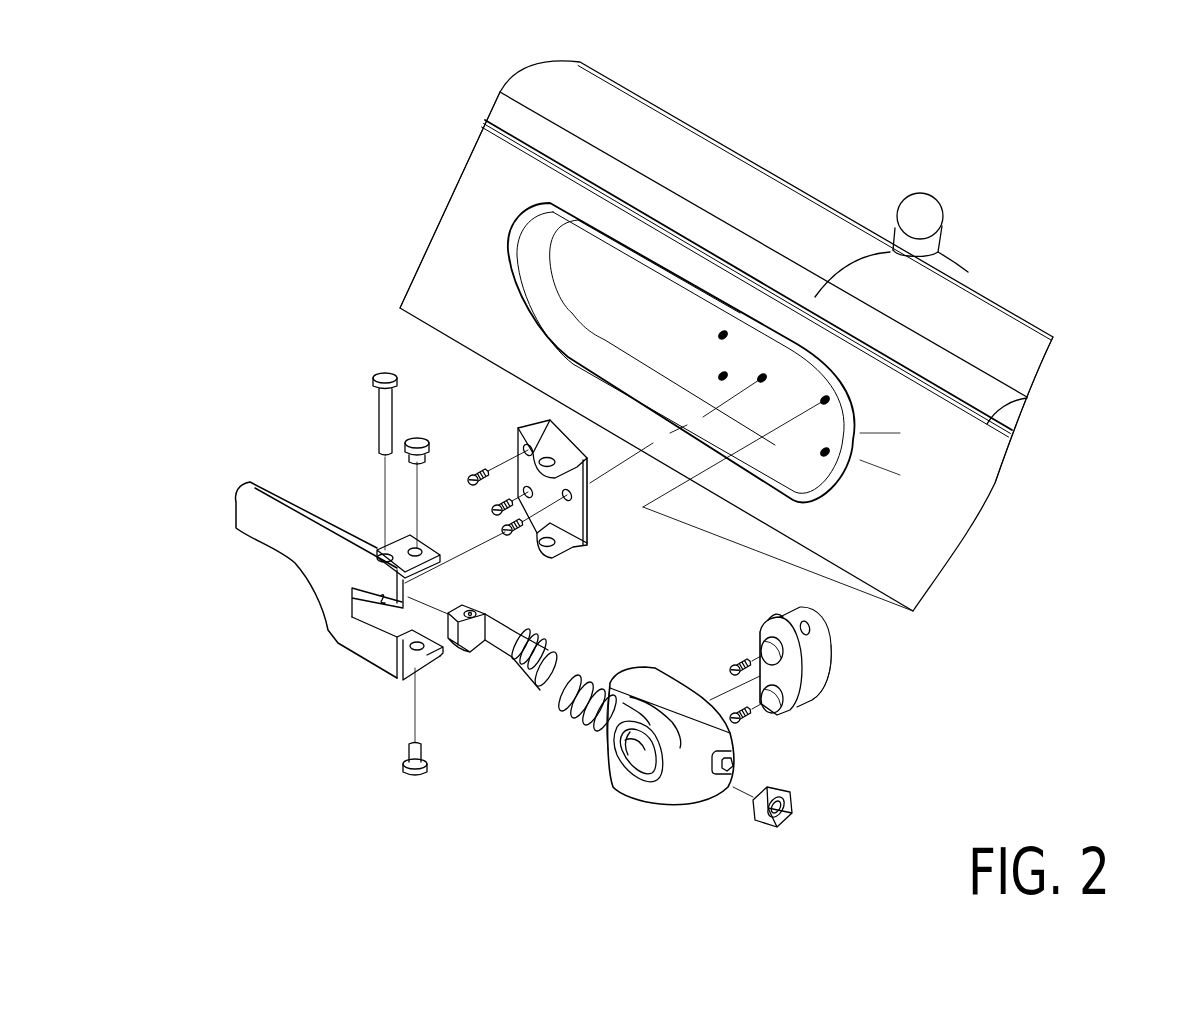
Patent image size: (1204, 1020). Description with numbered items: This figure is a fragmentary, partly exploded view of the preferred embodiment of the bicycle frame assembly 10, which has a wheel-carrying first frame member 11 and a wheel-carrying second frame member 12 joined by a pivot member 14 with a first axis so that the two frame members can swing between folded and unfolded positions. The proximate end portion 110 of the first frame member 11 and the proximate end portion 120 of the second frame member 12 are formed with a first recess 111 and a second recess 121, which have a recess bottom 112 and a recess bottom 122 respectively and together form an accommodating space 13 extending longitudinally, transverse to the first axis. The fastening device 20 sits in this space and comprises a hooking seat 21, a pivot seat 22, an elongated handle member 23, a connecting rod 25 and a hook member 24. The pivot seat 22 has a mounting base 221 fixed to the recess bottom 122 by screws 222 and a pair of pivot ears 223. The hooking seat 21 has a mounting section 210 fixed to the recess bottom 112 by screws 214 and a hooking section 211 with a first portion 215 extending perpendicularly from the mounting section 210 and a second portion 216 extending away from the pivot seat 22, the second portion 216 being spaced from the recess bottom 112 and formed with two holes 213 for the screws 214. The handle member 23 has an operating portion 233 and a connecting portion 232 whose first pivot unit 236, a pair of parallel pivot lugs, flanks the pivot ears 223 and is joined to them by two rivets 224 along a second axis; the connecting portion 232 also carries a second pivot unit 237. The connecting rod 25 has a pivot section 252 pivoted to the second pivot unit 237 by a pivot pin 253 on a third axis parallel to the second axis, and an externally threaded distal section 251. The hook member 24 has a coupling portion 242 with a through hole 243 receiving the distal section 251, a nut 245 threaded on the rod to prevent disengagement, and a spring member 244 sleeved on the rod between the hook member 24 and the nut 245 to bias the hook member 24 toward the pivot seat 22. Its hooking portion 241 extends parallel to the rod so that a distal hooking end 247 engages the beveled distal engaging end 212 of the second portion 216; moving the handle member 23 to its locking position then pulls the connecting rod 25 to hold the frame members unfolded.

The bicycle frame assembly 10 is at (730, 333).
The first frame member 11 is at (953, 278).
The second frame member 12 is at (905, 225).
The accommodating space 13 is at (587, 248).
The pivot member 14 is at (940, 223).
The proximate end portion of the first frame member 110 is at (1027, 398).
The first recess 111 is at (860, 460).
The recess bottom of the first recess 112 is at (860, 433).
The proximate end portion of the second frame member 120 is at (485, 173).
The second recess 121 is at (522, 273).
The recess bottom of the second recess 122 is at (652, 280).
The fastening device 20 is at (589, 593).
The hooking seat 21 is at (839, 622).
The mounting section 210 is at (808, 612).
The hooking section 211 is at (800, 692).
The beveled distal engaging end 212 is at (832, 680).
The holes 213 is at (770, 637).
The screws 214 is at (731, 655).
The first portion 215 is at (805, 621).
The second portion 216 is at (767, 618).
The pivot seat 22 is at (502, 464).
The mounting base 221 is at (587, 490).
The screws 222 is at (480, 443).
The pivot ears 223 is at (532, 458).
The rivets 224 is at (400, 443).
The handle member 23 is at (329, 619).
The connecting portion 232 is at (377, 652).
The operating portion 233 is at (253, 528).
The first pivot unit 236 is at (427, 667).
The second pivot unit 237 is at (367, 610).
The hook member 24 is at (726, 734).
The hooking portion 241 is at (700, 795).
The coupling portion 242 is at (607, 770).
The through hole 243 is at (630, 658).
The spring member 244 is at (558, 710).
The nut 245 is at (792, 810).
The distal hooking end 247 is at (728, 762).
The connecting rod 25 is at (414, 538).
The distal section 251 is at (525, 678).
The pivot section 252 is at (483, 597).
The pivot pin 253 is at (375, 381).